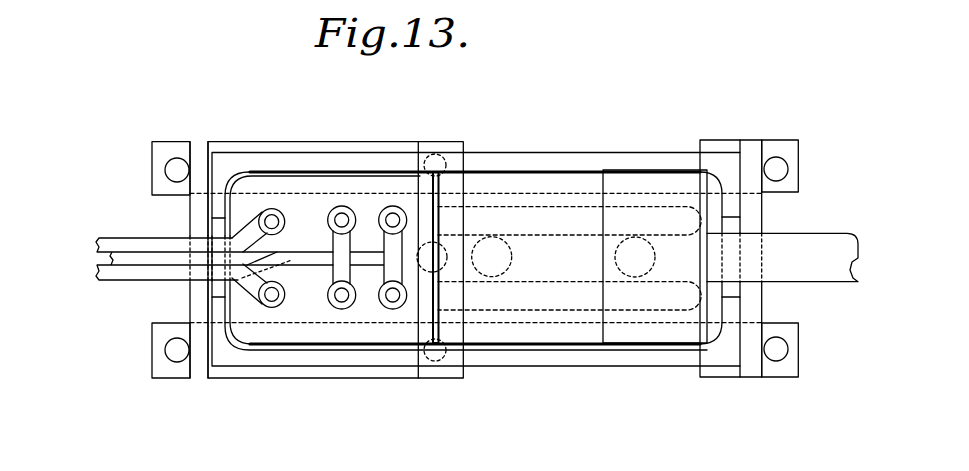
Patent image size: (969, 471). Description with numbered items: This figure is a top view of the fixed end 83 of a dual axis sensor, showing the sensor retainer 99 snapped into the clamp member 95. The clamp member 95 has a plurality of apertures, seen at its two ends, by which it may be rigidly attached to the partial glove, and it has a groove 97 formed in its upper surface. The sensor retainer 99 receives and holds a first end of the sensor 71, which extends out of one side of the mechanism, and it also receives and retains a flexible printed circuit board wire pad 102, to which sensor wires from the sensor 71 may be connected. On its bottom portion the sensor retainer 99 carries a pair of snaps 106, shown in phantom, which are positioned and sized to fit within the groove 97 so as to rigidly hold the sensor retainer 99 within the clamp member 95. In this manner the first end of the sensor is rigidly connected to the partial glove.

The sensor 71 is at (810, 233).
The fixed end 83 is at (460, 107).
The clamp member 95 is at (750, 385).
The groove 97 is at (563, 283).
The sensor retainer 99 is at (585, 150).
The flexible printed circuit board wire pad 102 is at (308, 302).
The snaps 106 is at (503, 250).